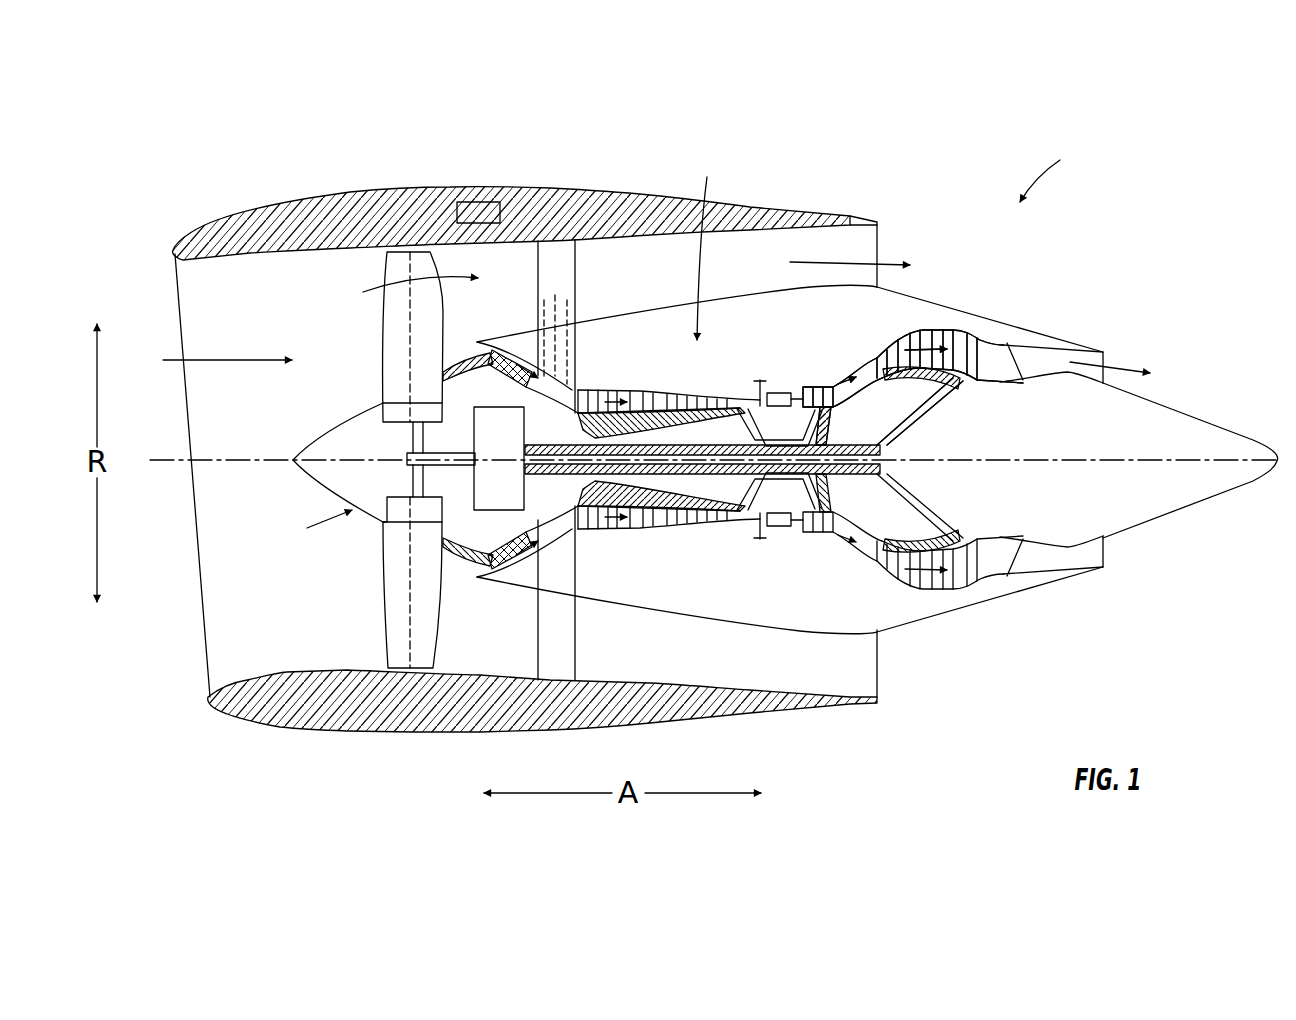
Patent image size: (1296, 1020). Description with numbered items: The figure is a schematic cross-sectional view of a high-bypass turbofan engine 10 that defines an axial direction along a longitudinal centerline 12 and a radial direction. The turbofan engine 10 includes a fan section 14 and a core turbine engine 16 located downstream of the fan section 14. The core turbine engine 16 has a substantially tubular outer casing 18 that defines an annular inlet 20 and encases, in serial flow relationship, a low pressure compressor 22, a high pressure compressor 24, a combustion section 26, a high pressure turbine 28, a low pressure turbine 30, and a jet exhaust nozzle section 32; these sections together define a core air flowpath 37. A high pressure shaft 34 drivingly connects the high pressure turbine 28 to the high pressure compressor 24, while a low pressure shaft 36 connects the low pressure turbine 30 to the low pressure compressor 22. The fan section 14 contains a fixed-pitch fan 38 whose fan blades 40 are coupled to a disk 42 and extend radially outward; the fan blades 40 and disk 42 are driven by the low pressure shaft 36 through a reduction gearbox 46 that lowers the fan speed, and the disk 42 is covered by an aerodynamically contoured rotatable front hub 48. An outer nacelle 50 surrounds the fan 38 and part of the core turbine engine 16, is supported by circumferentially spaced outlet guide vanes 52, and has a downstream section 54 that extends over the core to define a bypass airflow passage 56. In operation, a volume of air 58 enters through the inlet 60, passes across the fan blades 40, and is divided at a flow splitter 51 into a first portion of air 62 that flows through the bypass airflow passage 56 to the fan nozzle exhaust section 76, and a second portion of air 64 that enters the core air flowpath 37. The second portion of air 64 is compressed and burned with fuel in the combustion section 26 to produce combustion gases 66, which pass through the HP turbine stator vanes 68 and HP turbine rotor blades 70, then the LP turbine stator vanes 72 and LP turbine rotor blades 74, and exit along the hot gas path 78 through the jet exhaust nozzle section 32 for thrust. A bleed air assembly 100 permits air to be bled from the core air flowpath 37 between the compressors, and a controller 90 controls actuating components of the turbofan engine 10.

The turbofan engine 10 is at (1058, 172).
The longitudinal centerline 12 is at (1043, 460).
The fan section 14 is at (343, 272).
The core turbine engine 16 is at (705, 240).
The outer casing 18 is at (735, 622).
The annular inlet 20 is at (478, 567).
The low pressure compressor 22 is at (537, 548).
The high pressure compressor 24 is at (605, 530).
The combustion section 26 is at (775, 534).
The high pressure turbine 28 is at (835, 530).
The low pressure turbine 30 is at (960, 589).
The jet exhaust nozzle section 32 is at (1020, 569).
The high pressure shaft 34 is at (824, 418).
The low pressure shaft 36 is at (906, 420).
The core air flowpath 37 is at (558, 527).
The fixed-pitch fan 38 is at (374, 495).
The fan blades 40 is at (383, 610).
The disk 42 is at (383, 406).
The reduction gearbox 46 is at (512, 423).
The front hub 48 is at (308, 478).
The outer nacelle 50 is at (433, 733).
The flow splitter 51 is at (522, 343).
The outlet guide vanes 52 is at (578, 246).
The downstream section of the nacelle 54 is at (838, 213).
The bypass airflow passage 56 is at (677, 295).
The volume of air 58 is at (228, 357).
The inlet 60 is at (208, 697).
The first portion of air 62 is at (392, 308).
The second portion of air 64 is at (477, 342).
The combustion gases 66 is at (920, 332).
The HP turbine stator vanes 68 is at (822, 514).
The HP turbine rotor blades 70 is at (903, 500).
The LP turbine stator vanes 72 is at (883, 567).
The LP turbine rotor blades 74 is at (893, 577).
The fan nozzle exhaust section 76 is at (867, 247).
The hot gas path 78 is at (870, 368).
The controller 90 is at (468, 202).
The bleed air assembly 100 is at (556, 292).